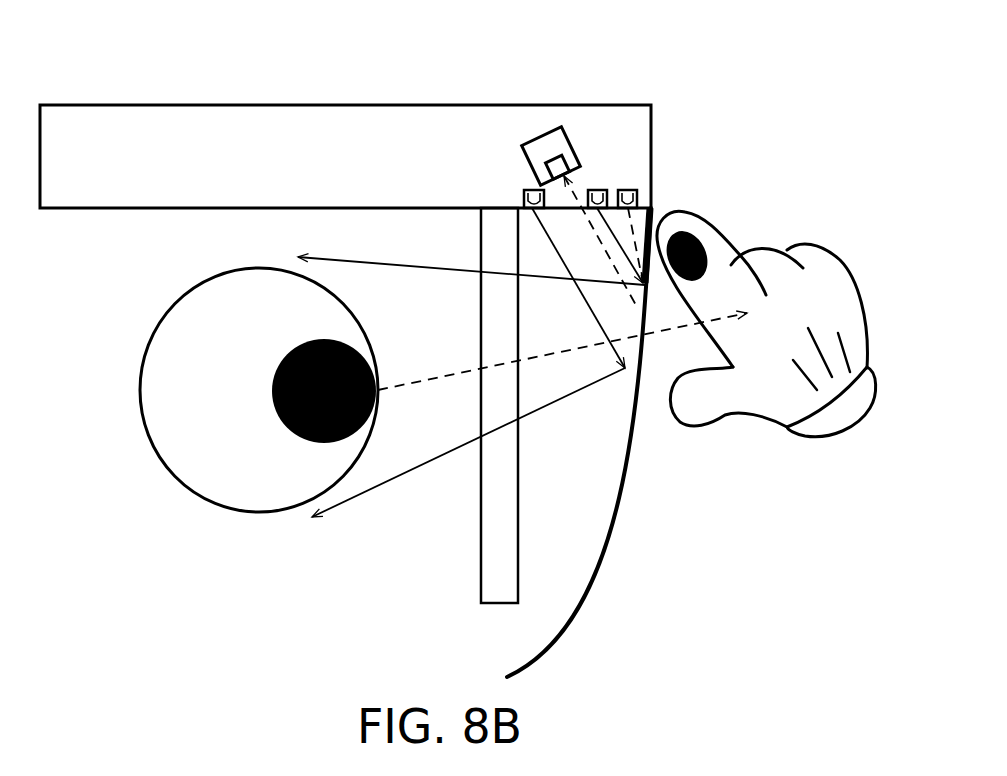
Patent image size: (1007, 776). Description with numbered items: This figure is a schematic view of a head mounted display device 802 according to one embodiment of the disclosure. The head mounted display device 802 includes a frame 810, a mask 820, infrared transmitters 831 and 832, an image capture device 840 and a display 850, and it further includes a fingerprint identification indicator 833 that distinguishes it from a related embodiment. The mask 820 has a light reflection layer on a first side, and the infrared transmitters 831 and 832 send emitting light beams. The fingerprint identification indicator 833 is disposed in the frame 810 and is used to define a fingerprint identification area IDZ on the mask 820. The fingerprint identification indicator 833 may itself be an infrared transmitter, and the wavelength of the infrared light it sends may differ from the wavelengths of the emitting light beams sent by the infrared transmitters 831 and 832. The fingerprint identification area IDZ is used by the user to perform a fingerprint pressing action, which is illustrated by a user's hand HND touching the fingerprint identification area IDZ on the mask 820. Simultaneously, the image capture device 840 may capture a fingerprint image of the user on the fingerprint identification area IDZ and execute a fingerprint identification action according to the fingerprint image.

The frame 810 is at (237, 105).
The mask 820 is at (594, 581).
The infrared transmitter 831 is at (524, 196).
The infrared transmitter 832 is at (597, 189).
The fingerprint identification indicator 833 is at (630, 189).
The image capture device 840 is at (537, 139).
The display 850 is at (481, 558).
The fingerprint identification area IDZ is at (655, 214).
The hand HND is at (852, 308).
The head mounted display device 802 is at (903, 684).